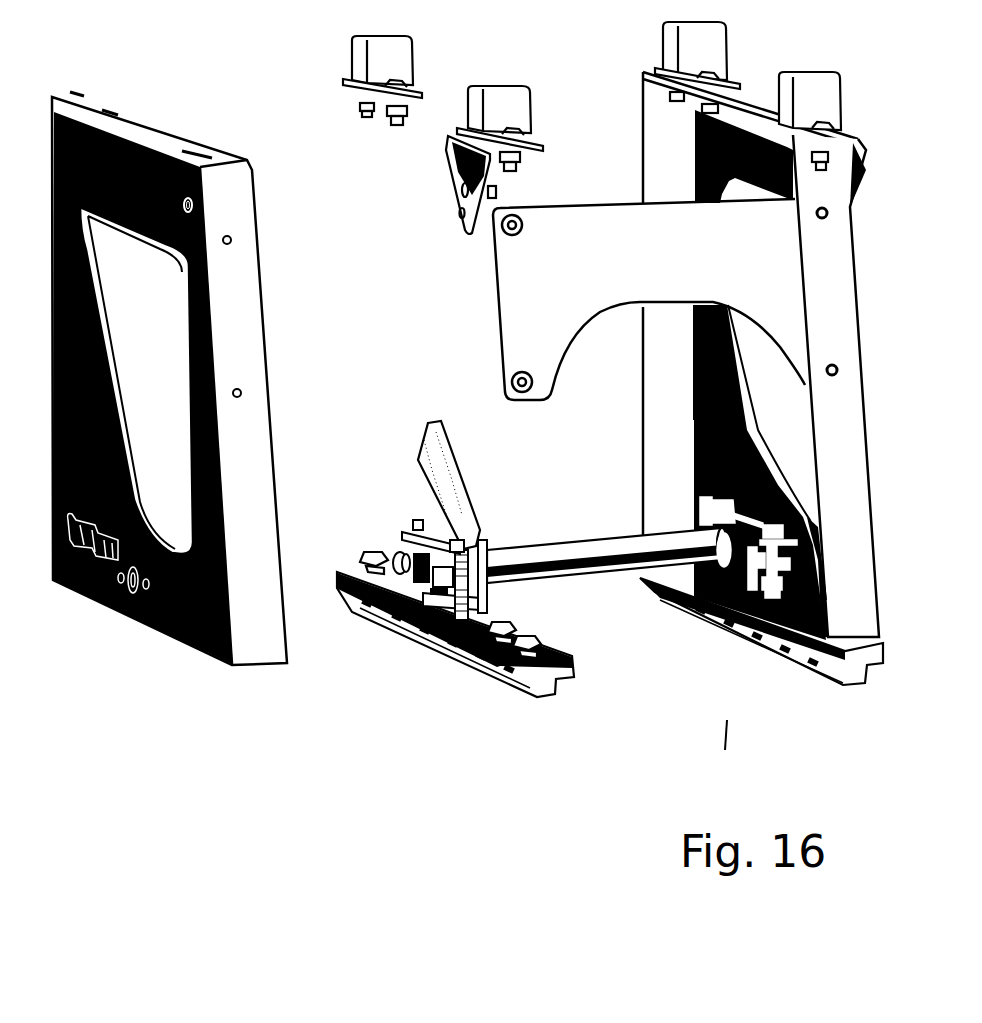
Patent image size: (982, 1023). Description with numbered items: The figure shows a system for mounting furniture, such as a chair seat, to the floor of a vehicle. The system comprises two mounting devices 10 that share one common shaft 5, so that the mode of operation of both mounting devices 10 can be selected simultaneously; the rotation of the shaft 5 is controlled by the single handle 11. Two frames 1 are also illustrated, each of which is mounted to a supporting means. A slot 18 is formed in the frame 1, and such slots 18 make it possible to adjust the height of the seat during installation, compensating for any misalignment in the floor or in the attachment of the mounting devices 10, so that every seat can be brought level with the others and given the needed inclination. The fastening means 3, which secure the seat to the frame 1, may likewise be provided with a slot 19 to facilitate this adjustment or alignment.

The frame 1 is at (165, 101).
The fastening means 3 is at (320, 73).
The shaft 5 is at (578, 600).
The mounting device 10 is at (403, 590).
The handle 11 is at (473, 455).
The slot 18 is at (215, 207).
The slot 19 is at (447, 219).